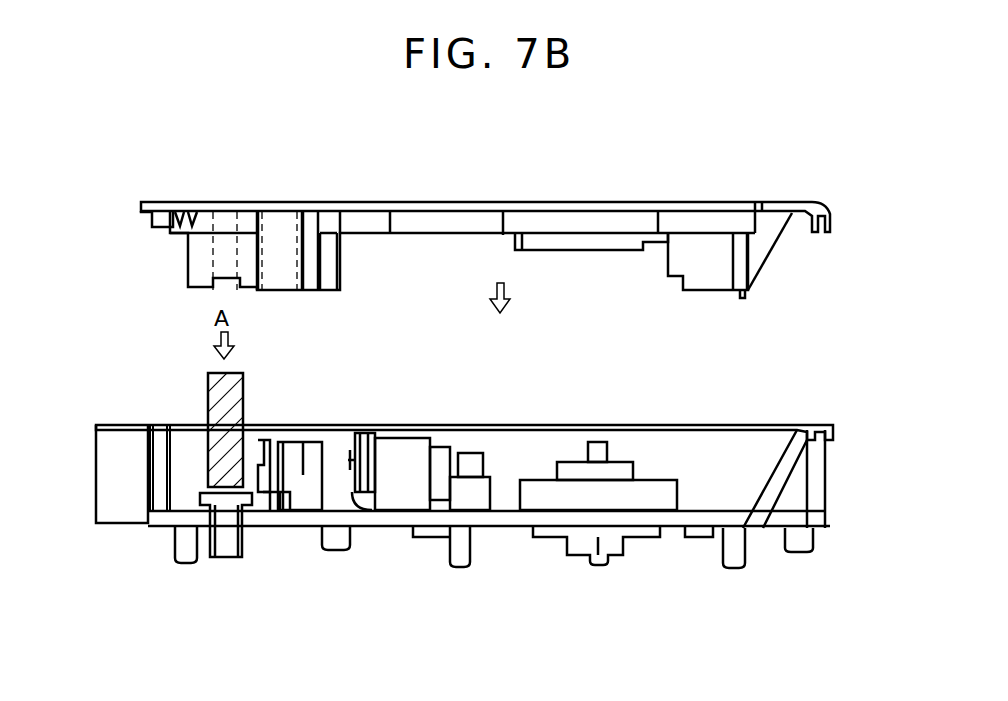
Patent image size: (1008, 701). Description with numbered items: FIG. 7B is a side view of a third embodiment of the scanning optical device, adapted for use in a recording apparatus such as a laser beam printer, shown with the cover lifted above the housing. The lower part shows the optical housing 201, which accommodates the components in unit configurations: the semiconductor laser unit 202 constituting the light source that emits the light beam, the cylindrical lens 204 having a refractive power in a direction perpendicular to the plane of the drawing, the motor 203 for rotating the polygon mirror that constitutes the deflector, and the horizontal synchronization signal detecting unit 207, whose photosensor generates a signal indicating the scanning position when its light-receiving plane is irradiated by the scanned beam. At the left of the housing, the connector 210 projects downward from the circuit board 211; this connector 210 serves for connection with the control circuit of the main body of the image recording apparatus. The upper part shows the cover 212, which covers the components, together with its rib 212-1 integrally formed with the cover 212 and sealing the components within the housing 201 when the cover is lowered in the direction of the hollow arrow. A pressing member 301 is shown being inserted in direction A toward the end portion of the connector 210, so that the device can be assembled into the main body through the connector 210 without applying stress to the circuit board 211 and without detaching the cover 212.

The cover 212 is at (318, 203).
The rib 212-1 is at (289, 291).
The optical housing 201 is at (832, 480).
The circuit board 211 is at (180, 487).
The pressing member 301 is at (238, 404).
The connector 210 is at (229, 548).
The horizontal synchronization signal detecting unit 207 is at (293, 447).
The semiconductor laser unit 202 is at (406, 440).
The cylindrical lens 204 is at (478, 455).
The motor 203 is at (663, 487).